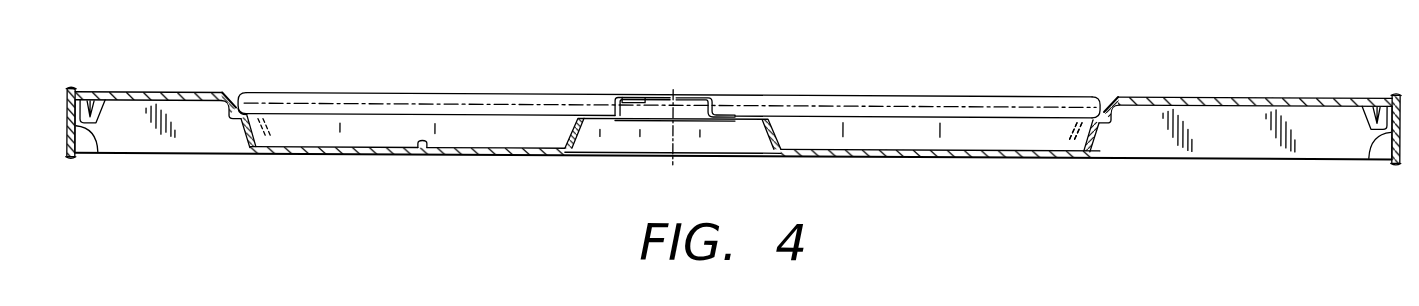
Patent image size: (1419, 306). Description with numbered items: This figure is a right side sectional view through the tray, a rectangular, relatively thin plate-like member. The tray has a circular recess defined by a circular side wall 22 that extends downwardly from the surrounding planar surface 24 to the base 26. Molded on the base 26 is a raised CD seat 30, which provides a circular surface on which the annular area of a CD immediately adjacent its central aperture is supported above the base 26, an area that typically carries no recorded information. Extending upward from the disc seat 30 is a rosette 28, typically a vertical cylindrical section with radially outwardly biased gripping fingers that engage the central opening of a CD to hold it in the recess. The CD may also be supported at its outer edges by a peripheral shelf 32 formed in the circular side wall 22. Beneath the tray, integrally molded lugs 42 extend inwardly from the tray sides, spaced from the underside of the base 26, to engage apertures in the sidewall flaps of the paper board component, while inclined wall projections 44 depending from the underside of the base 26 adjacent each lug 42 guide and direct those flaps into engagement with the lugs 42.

The circular side wall 22 is at (232, 108).
The planar surface 24 is at (138, 92).
The base 26 is at (423, 150).
The rosette 28 is at (628, 100).
The raised CD seat 30 is at (592, 110).
The peripheral shelf 32 is at (239, 113).
The lug 42 is at (98, 152).
The inclined wall projection 44 is at (103, 119).